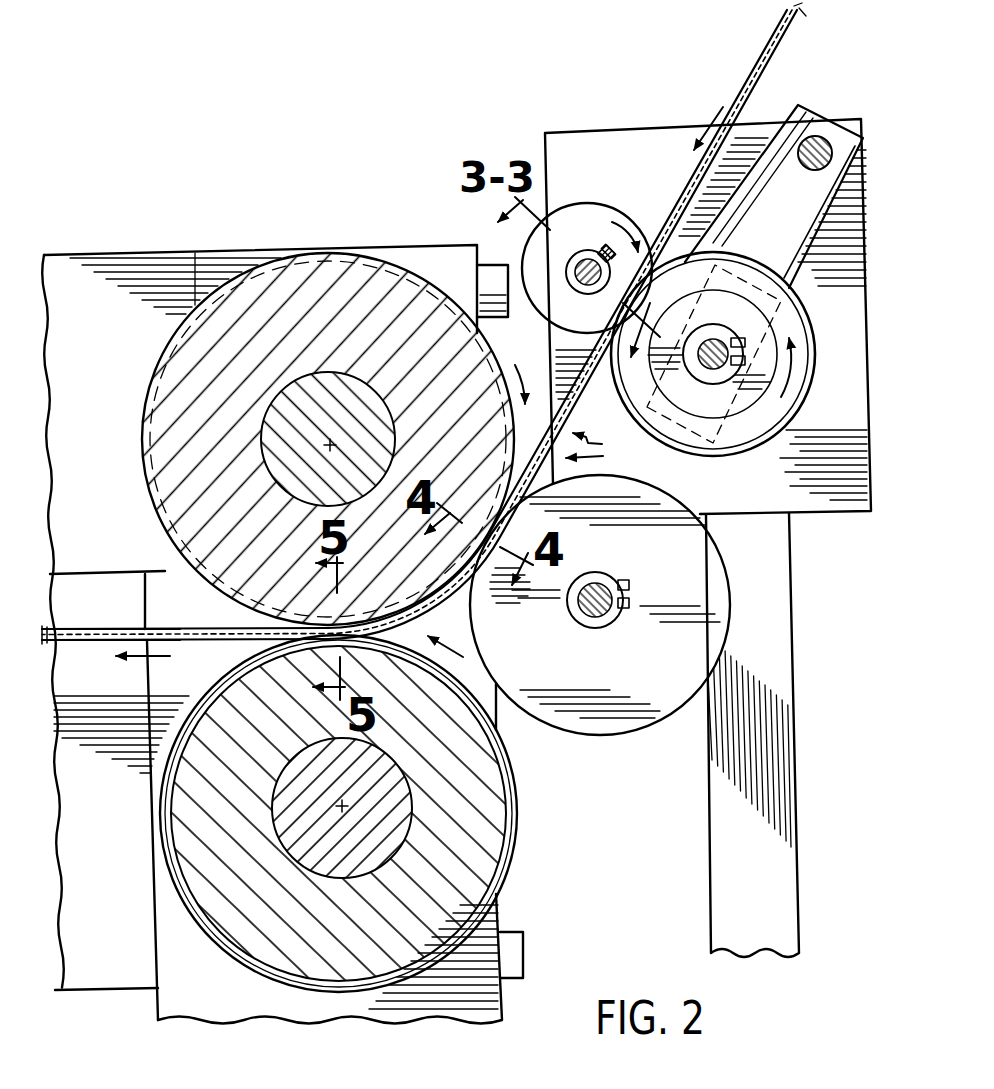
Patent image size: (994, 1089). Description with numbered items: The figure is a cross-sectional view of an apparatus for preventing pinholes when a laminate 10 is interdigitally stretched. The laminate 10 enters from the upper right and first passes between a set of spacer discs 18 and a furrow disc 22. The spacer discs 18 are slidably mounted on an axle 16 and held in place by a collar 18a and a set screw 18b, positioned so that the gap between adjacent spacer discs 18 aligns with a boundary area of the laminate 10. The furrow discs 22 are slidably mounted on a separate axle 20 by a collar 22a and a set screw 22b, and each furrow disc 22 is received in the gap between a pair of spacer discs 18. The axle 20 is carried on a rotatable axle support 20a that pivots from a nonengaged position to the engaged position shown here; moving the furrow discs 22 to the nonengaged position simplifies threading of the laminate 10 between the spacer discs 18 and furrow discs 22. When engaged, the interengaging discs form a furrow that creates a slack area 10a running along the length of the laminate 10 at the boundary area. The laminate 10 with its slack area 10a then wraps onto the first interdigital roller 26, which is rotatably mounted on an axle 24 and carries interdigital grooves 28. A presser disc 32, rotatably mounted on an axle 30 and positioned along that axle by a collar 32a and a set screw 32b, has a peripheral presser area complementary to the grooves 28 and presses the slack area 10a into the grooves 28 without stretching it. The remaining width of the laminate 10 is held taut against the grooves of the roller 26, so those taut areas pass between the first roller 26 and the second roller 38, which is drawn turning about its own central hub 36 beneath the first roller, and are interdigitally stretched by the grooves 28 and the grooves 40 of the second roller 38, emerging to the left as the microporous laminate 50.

The laminate 10 is at (746, 93).
The slack area 10a is at (619, 454).
The axle 16 is at (569, 272).
The spacer discs 18 is at (611, 205).
The collar 18a is at (591, 284).
The set screw 18b is at (600, 246).
The axle 20 is at (703, 364).
The rotatable axle support 20a is at (790, 221).
The furrow discs 22 is at (714, 458).
The collar 22a is at (728, 335).
The set screw 22b is at (770, 323).
The axle 24 is at (332, 426).
The first interdigital roller 26 is at (340, 336).
The interdigital grooves 28 is at (150, 413).
The axle 30 is at (590, 608).
The presser disc 32 is at (597, 737).
The collar 32a is at (619, 617).
The set screw 32b is at (630, 572).
The hub of lower drum 36 is at (355, 793).
The second roller 38 is at (352, 941).
The interdigital grooves 40 is at (222, 936).
The microporous laminate 50 is at (88, 628).